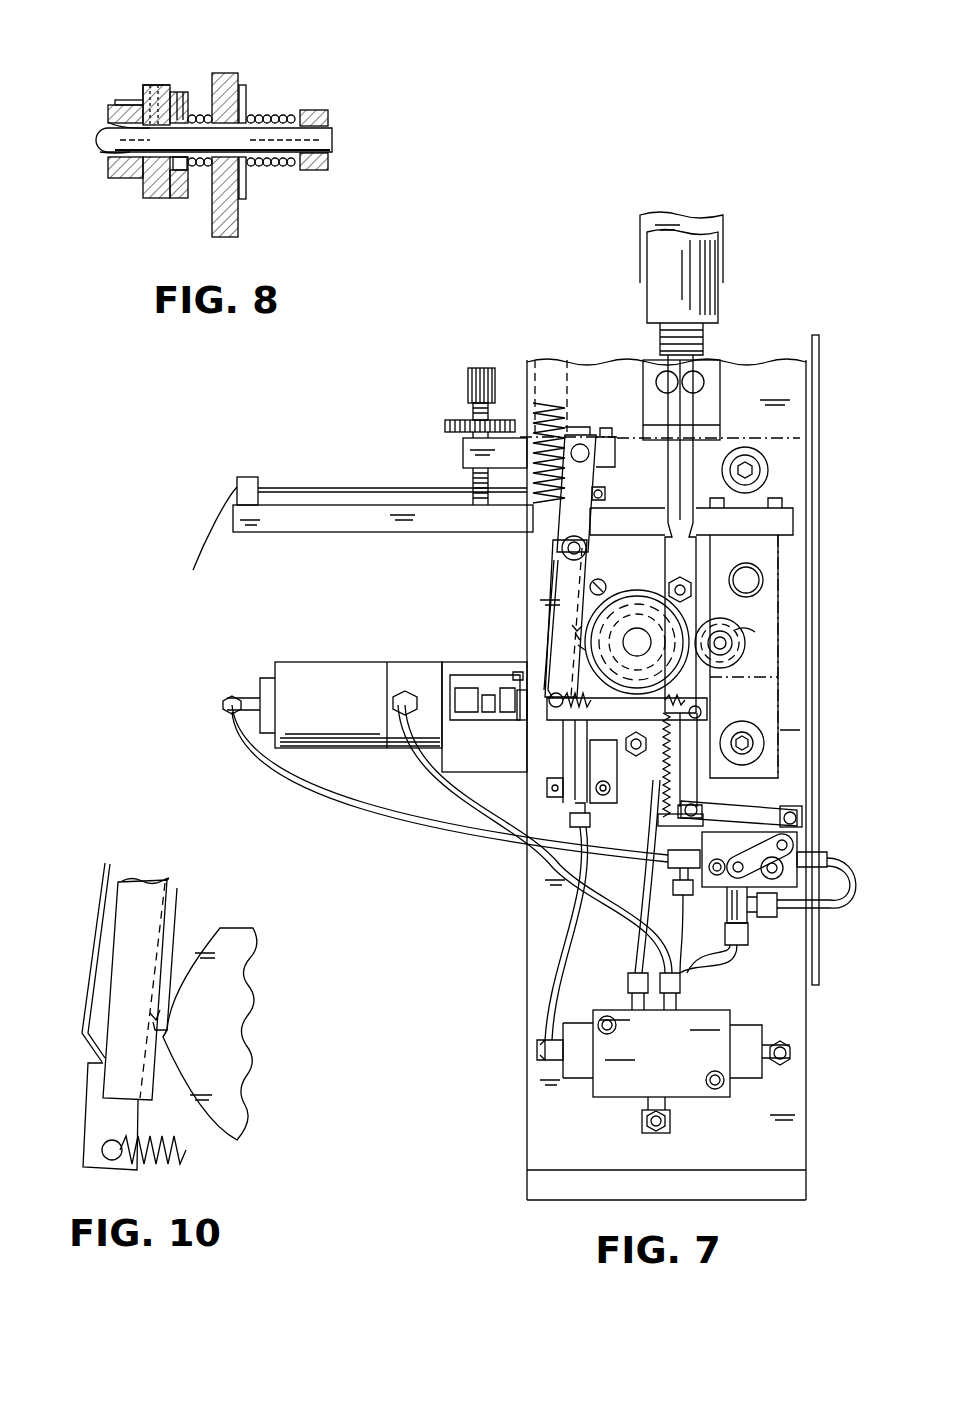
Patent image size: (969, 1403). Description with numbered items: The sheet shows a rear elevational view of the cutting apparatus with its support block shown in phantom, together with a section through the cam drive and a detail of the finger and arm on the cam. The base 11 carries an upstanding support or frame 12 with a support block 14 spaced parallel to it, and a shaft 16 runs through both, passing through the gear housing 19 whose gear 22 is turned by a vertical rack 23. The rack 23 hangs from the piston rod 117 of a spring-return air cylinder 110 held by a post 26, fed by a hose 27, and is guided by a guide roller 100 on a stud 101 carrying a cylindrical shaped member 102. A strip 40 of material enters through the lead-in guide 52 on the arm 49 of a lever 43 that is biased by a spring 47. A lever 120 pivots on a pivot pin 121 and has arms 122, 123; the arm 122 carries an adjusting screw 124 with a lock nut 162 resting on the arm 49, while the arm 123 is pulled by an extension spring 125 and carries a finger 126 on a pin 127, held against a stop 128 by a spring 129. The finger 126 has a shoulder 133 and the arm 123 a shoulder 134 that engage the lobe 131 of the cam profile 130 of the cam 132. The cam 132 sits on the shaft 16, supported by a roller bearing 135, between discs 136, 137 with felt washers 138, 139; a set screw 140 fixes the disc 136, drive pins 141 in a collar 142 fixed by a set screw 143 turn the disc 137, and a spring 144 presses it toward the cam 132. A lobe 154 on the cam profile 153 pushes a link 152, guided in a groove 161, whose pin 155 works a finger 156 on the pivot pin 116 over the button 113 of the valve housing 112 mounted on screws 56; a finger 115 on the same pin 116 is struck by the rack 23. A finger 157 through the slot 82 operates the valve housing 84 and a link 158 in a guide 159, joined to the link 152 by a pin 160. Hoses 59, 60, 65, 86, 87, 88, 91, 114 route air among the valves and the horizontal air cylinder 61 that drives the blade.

In FIG. 7, the base 11 is at (522, 1178).
In FIG. 7, the support or frame 12 is at (525, 1080).
In FIG. 8, the support block 14 is at (238, 80).
In FIG. 7, the support block 14 is at (775, 714).
In FIG. 8, the shaft 16 is at (334, 139).
In FIG. 7, the shaft 16 is at (670, 585).
In FIG. 8, the gear housing 19 is at (115, 101).
In FIG. 8, the gear 22 is at (130, 96).
In FIG. 7, the rack 23 is at (665, 788).
In FIG. 7, the post 26 is at (723, 250).
In FIG. 7, the hose 27 is at (820, 438).
In FIG. 7, the strip of material 40 is at (288, 490).
In FIG. 7, the lever 43 is at (340, 532).
In FIG. 7, the spring 47 is at (565, 412).
In FIG. 7, the arm 49 is at (285, 535).
In FIG. 7, the lead-in guide 52 is at (247, 477).
In FIG. 7, the screws 56 is at (790, 867).
In FIG. 7, the hose 59 is at (700, 972).
In FIG. 7, the hose 60 is at (300, 768).
In FIG. 7, the air cylinder 61 is at (290, 660).
In FIG. 7, the hose 65 is at (655, 1135).
In FIG. 7, the horizontal slot 82 is at (508, 677).
In FIG. 7, the valve housing 84 is at (598, 808).
In FIG. 7, the hose 86 is at (655, 905).
In FIG. 7, the hose 87 is at (548, 990).
In FIG. 7, the hose 88 is at (447, 780).
In FIG. 7, the hose 91 is at (790, 1050).
In FIG. 7, the guide roller 100 is at (778, 676).
In FIG. 7, the stud 101 is at (727, 637).
In FIG. 7, the cylindrical shaped member 102 is at (745, 648).
In FIG. 7, the air cylinder 110 is at (718, 305).
In FIG. 7, the valve housing 112 is at (832, 905).
In FIG. 7, the button 113 is at (740, 836).
In FIG. 7, the hose 114 is at (790, 908).
In FIG. 7, the finger 115 is at (660, 826).
In FIG. 7, the pivot pin 116 is at (802, 812).
In FIG. 7, the piston rod 117 is at (705, 408).
In FIG. 7, the lever 120 is at (528, 430).
In FIG. 7, the pivot pin 121 is at (585, 460).
In FIG. 7, the arm 122 is at (463, 455).
In FIG. 10, the arm 123 is at (95, 1125).
In FIG. 7, the arm 123 is at (580, 517).
In FIG. 7, the adjusting screw 124 is at (468, 380).
In FIG. 10, the extension spring 125 is at (172, 1160).
In FIG. 7, the extension spring 125 is at (700, 693).
In FIG. 10, the finger 126 is at (120, 918).
In FIG. 7, the finger 126 is at (562, 595).
In FIG. 7, the pin 127 is at (548, 560).
In FIG. 7, the stop 128 is at (600, 580).
In FIG. 10, the spring 129 is at (84, 995).
In FIG. 7, the spring 129 is at (550, 580).
In FIG. 8, the cam profile 130 is at (172, 98).
In FIG. 10, the lobe 131 is at (160, 1035).
In FIG. 7, the lobe 131 is at (578, 645).
In FIG. 8, the cam 132 is at (162, 199).
In FIG. 10, the cam 132 is at (220, 930).
In FIG. 7, the cam 132 is at (690, 620).
In FIG. 10, the shoulder 133 is at (155, 1028).
In FIG. 7, the shoulder 133 is at (575, 633).
In FIG. 10, the shoulder 134 is at (150, 1014).
In FIG. 7, the shoulder 134 is at (570, 622).
In FIG. 8, the roller bearing 135 is at (247, 103).
In FIG. 8, the disc 136 is at (145, 197).
In FIG. 8, the disc 137 is at (180, 105).
In FIG. 8, the felt washer 138 is at (160, 200).
In FIG. 8, the felt washer 139 is at (200, 110).
In FIG. 8, the set screw 140 is at (150, 128).
In FIG. 8, the drive pins 141 is at (130, 152).
In FIG. 8, the collar 142 is at (186, 149).
In FIG. 8, the set screw 143 is at (200, 122).
In FIG. 8, the spring 144 is at (208, 118).
In FIG. 7, the link 152 is at (700, 790).
In FIG. 8, the cam profile 153 is at (165, 90).
In FIG. 7, the lobe 154 is at (634, 595).
In FIG. 7, the pin 155 is at (680, 808).
In FIG. 7, the finger 156 is at (745, 806).
In FIG. 7, the finger 157 is at (520, 722).
In FIG. 7, the link 158 is at (618, 746).
In FIG. 7, the guide 159 is at (572, 812).
In FIG. 7, the pin 160 is at (705, 712).
In FIG. 7, the groove 161 is at (760, 628).
In FIG. 7, the lock nut 162 is at (452, 422).